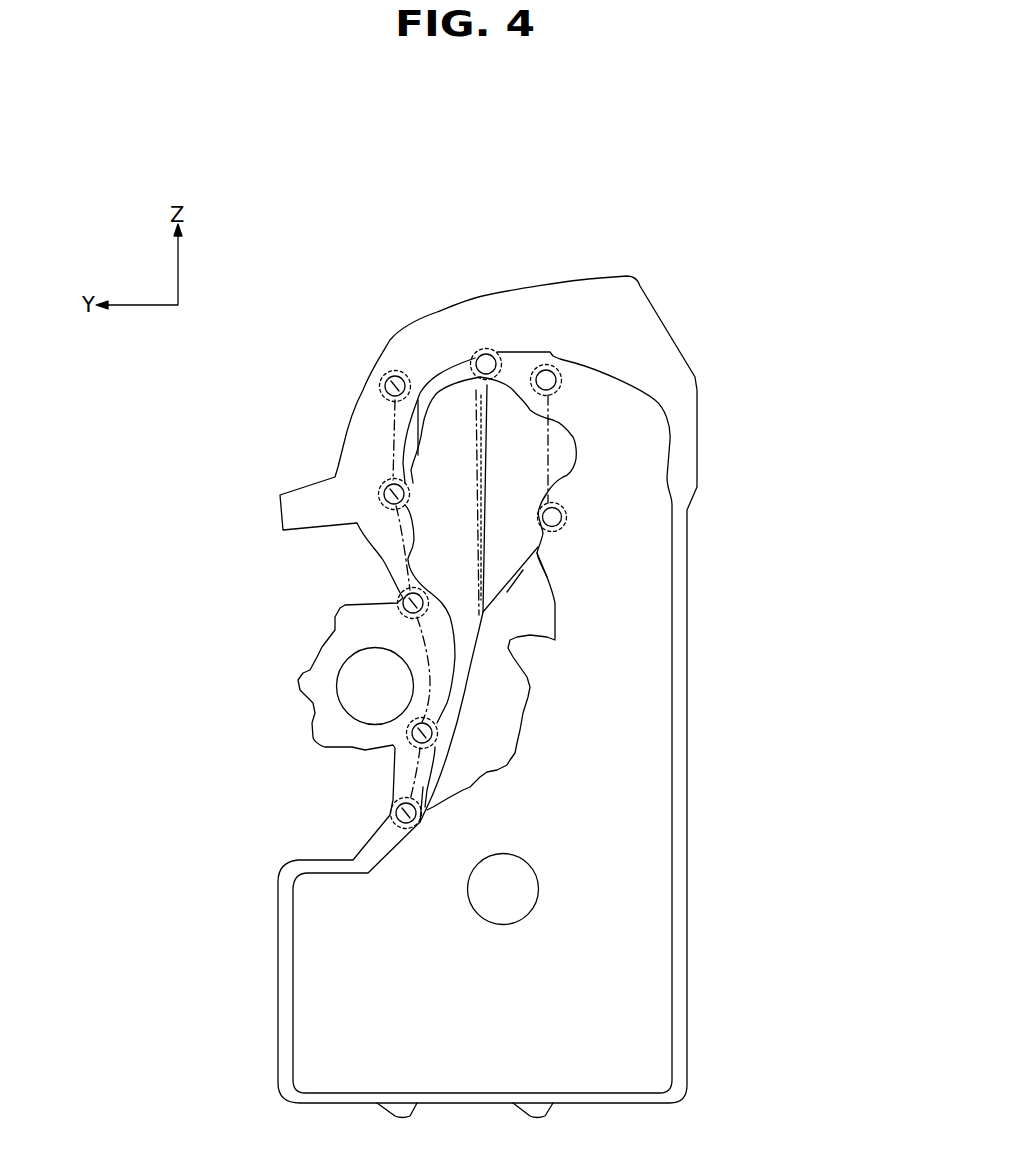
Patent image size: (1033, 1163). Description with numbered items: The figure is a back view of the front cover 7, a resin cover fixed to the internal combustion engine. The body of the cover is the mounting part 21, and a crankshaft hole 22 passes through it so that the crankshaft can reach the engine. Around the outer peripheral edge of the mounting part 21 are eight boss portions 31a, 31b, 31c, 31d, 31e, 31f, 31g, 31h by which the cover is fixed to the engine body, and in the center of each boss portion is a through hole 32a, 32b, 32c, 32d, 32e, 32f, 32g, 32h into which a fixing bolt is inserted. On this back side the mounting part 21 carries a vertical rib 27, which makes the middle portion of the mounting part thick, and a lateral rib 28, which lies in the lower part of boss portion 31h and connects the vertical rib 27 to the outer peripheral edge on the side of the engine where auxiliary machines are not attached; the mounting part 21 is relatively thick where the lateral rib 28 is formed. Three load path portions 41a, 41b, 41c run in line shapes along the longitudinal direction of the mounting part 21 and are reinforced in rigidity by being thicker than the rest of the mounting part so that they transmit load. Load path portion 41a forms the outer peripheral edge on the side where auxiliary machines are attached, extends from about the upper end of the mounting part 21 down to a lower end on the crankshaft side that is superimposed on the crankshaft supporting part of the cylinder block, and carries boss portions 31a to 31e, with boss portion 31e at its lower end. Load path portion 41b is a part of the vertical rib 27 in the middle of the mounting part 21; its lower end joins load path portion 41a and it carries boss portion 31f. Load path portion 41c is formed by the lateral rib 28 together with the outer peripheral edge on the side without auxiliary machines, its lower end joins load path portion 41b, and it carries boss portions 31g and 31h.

The front cover 7 is at (698, 301).
The mounting part 21 is at (520, 467).
The crankshaft hole 22 is at (538, 888).
The vertical rib 27 is at (484, 537).
The lateral rib 28 is at (510, 600).
The boss portion 31a is at (383, 378).
The boss portion 31b is at (381, 487).
The boss portion 31c is at (401, 603).
The boss portion 31d is at (412, 724).
The boss portion 31e is at (395, 808).
The boss portion 31f is at (477, 358).
The boss portion 31g is at (552, 370).
The boss portion 31h is at (561, 522).
The through hole 32a is at (379, 382).
The through hole 32b is at (377, 496).
The through hole 32c is at (398, 609).
The through hole 32d is at (407, 738).
The through hole 32e is at (391, 816).
The through hole 32f is at (471, 355).
The through hole 32g is at (538, 365).
The through hole 32h is at (565, 513).
The load path portion 41a is at (395, 535).
The load path portion 41b is at (483, 427).
The load path portion 41c is at (548, 440).